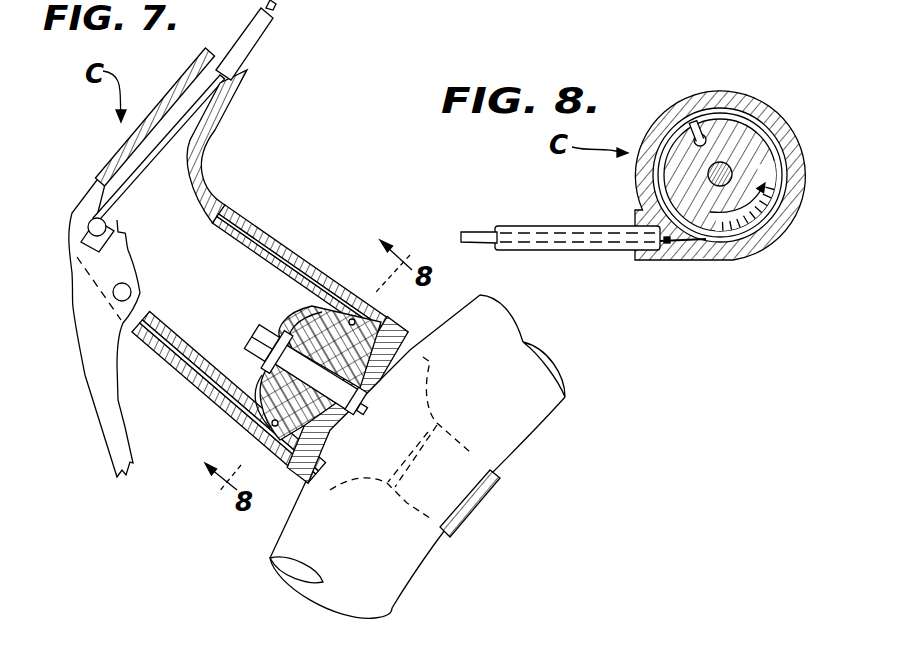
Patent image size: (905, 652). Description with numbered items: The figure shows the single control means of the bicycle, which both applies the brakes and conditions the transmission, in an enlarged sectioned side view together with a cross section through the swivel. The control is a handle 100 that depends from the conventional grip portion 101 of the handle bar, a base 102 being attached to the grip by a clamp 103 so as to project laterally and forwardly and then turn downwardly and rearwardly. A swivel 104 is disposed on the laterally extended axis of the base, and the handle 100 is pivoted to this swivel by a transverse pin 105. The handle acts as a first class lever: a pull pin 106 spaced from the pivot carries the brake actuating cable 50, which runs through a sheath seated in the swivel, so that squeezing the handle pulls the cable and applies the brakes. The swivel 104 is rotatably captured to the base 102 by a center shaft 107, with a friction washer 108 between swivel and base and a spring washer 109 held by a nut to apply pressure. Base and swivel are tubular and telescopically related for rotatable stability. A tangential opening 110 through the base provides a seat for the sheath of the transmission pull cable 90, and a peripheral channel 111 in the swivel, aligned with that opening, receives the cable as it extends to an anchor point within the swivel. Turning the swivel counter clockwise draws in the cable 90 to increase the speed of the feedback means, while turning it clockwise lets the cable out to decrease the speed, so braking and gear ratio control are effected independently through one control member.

In FIG. 7, the brake actuating cable 50 is at (257, 33).
In FIG. 8, the pull cable 90 is at (482, 225).
In FIG. 7, the handle 100 is at (83, 328).
In FIG. 7, the grip portion 101 is at (508, 432).
In FIG. 7, the base 102 is at (275, 237).
In FIG. 8, the base 102 is at (803, 198).
In FIG. 7, the clamp 103 is at (497, 480).
In FIG. 7, the swivel 104 is at (227, 197).
In FIG. 8, the swivel 104 is at (760, 150).
In FIG. 7, the transverse pin 105 is at (87, 227).
In FIG. 7, the pull pin 106 is at (131, 291).
In FIG. 7, the center shaft 107 is at (247, 327).
In FIG. 8, the center shaft 107 is at (733, 172).
In FIG. 7, the friction washer 108 is at (380, 338).
In FIG. 7, the spring washer 109 is at (309, 297).
In FIG. 8, the tangential opening 110 is at (675, 248).
In FIG. 8, the peripheral channel 111 is at (763, 217).